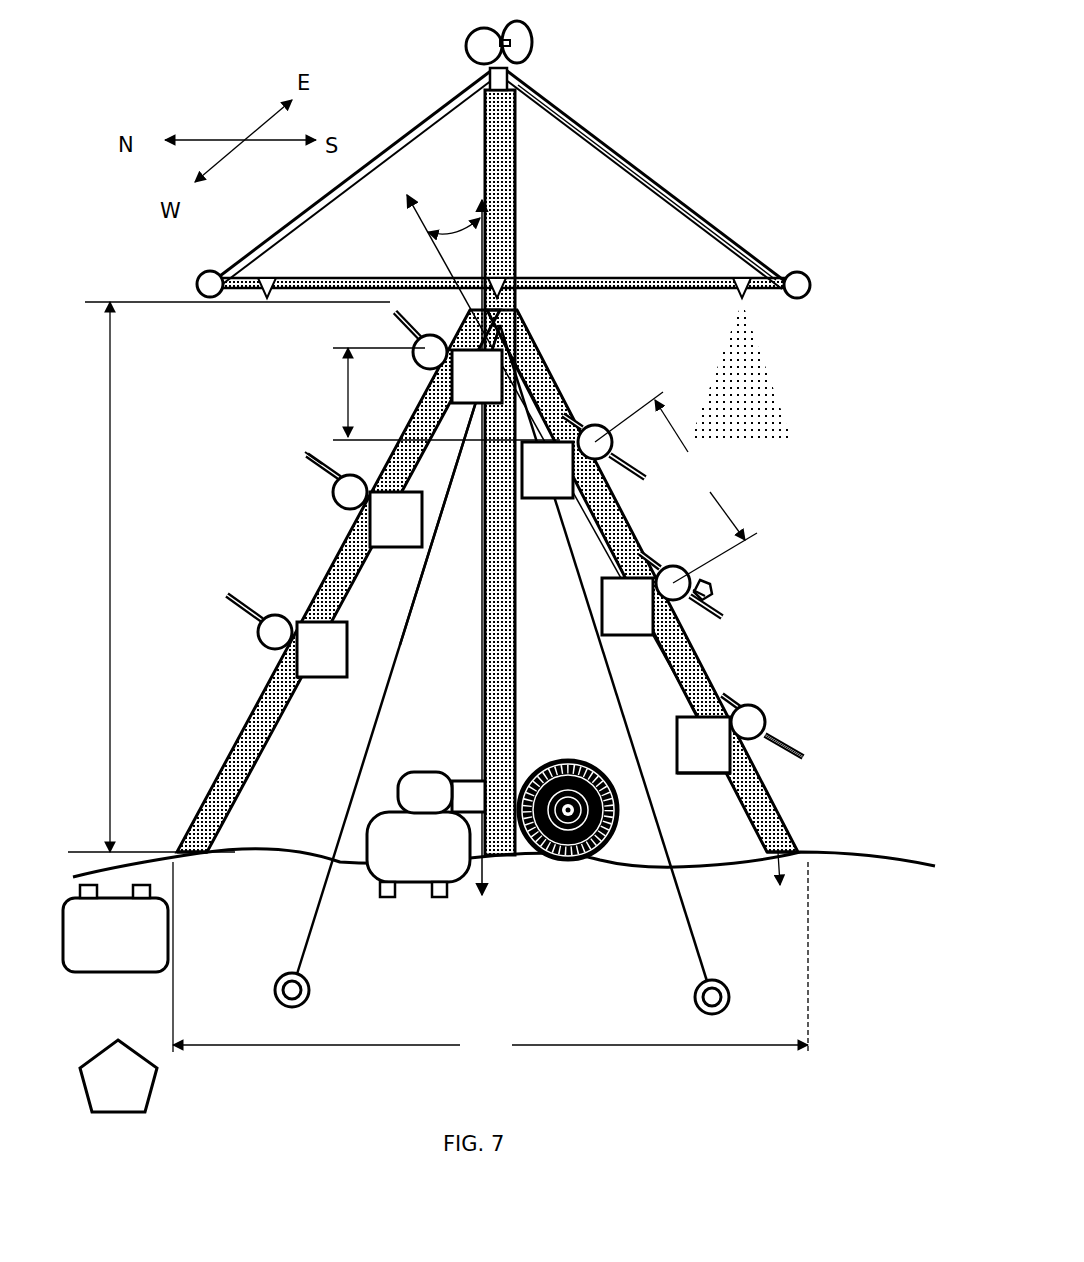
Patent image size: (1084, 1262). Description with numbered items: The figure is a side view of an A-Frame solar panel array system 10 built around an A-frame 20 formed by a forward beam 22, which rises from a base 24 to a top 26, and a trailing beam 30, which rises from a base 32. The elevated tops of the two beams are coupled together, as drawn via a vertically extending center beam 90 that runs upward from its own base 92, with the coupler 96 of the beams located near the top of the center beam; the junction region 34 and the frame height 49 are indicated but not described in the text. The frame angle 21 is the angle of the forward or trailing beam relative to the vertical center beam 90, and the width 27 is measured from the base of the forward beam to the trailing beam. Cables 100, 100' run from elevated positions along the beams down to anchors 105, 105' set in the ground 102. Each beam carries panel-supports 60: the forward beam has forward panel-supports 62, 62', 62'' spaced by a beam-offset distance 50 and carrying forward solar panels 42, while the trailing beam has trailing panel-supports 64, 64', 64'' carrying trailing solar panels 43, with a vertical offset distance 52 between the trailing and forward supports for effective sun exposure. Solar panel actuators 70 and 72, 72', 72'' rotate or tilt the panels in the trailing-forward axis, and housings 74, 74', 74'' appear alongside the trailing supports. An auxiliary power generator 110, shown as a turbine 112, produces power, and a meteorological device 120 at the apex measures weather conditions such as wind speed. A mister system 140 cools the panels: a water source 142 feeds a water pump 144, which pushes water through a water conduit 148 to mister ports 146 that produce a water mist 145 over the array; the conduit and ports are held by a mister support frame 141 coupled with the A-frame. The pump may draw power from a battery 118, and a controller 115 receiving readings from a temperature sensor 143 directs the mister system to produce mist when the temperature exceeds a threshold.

The A-Frame solar panel array system 10 is at (793, 225).
The A-frame 20 is at (470, 660).
The frame angle 21 is at (460, 230).
The forward beam 22 is at (690, 665).
The base 24 is at (790, 822).
The top 26 is at (565, 352).
The width 27 is at (490, 960).
The trailing beam 30 is at (255, 720).
The base 32 is at (197, 822).
The leg junction 34 is at (472, 332).
The forward solar panels 42 is at (712, 595).
The trailing solar panels 43 is at (305, 455).
The height 49 is at (229, 577).
The beam-offset distance 50 is at (700, 470).
The vertical offset distance 52 is at (345, 400).
The panel-supports 60 is at (772, 727).
The forward panel-support 62 is at (803, 708).
The forward panel-support 62' is at (698, 592).
The forward panel-support 62'' is at (613, 411).
The trailing panel-support 64 is at (243, 599).
The trailing panel-support 64' is at (296, 482).
The trailing panel-support 64'' is at (397, 340).
The solar panel actuator 70 is at (700, 760).
The solar panel actuator 72 is at (645, 732).
The solar panel actuator 72' is at (596, 614).
The solar panel actuator 72'' is at (586, 476).
The sensor housing 74 is at (316, 684).
The sensor housing 74' is at (421, 528).
The sensor housing 74'' is at (436, 392).
The center beam 90 is at (500, 605).
The base 92 is at (510, 860).
The coupler 96 is at (520, 327).
The cable 100 is at (356, 639).
The cable 100' is at (645, 661).
The ground 102 is at (300, 857).
The anchor 105 is at (341, 976).
The anchor 105' is at (663, 999).
The auxiliary power generator 110 is at (560, 860).
The turbine 112 is at (620, 835).
The controller 115 is at (128, 1115).
The battery 118 is at (115, 945).
The meteorological device 120 is at (470, 48).
The mister system 140 is at (622, 148).
The mister support frame 141 is at (672, 178).
The water source 142 is at (425, 885).
The temperature sensor 143 is at (703, 585).
The water pump 144 is at (430, 790).
The water mist 145 is at (760, 395).
The mister ports 146 is at (750, 300).
The water conduit 148 is at (640, 282).